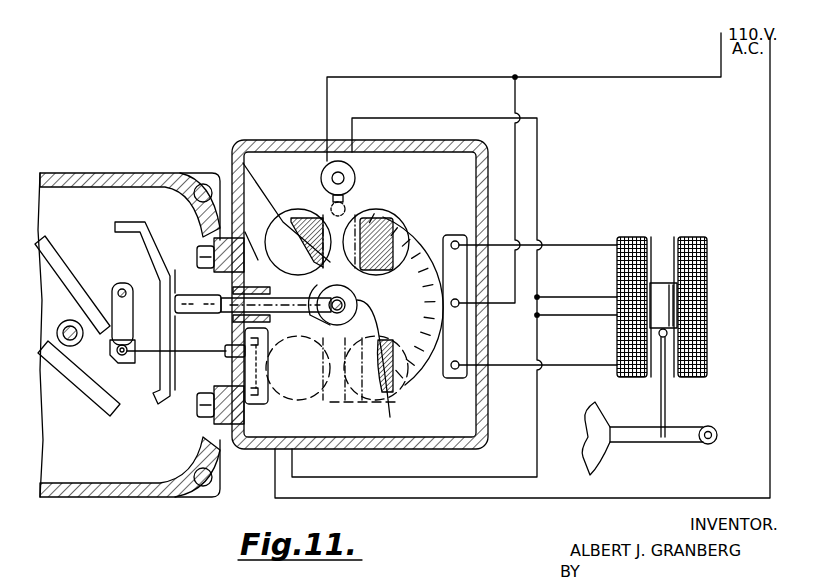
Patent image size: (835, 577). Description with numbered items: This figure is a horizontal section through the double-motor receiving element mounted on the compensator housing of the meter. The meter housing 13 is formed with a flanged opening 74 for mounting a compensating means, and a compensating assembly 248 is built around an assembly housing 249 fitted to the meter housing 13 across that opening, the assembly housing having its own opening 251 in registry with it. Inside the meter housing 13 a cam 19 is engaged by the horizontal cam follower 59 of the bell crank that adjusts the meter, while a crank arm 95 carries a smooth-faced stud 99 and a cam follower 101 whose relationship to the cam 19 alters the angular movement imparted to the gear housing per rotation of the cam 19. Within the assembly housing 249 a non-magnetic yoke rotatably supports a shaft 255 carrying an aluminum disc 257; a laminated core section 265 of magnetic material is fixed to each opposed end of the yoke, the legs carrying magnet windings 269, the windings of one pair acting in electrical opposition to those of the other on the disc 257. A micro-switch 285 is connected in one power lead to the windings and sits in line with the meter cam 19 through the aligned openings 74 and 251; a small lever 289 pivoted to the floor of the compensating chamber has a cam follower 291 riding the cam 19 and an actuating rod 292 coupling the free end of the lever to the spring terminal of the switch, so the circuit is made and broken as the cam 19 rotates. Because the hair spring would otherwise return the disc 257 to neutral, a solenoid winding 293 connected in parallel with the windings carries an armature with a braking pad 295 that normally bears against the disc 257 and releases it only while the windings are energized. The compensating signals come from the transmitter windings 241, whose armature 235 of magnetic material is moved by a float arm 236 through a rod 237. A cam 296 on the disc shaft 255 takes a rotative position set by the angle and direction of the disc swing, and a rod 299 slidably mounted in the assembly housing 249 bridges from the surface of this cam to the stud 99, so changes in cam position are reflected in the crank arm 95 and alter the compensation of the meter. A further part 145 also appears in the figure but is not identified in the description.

The housing 13 is at (112, 175).
The cam 19 is at (66, 322).
The horizontal cam follower 59 is at (72, 290).
The flanged opening 74 is at (202, 394).
The crank arm 95 is at (160, 360).
The smooth-faced stud 99 is at (194, 295).
The cam follower 101 is at (85, 388).
The cam 145 is at (600, 414).
The armature 235 is at (658, 294).
The float arm 236 is at (640, 444).
The rod 237 is at (668, 401).
The windings 241 is at (706, 270).
The assembly 248 is at (384, 419).
The assembly housing 249 is at (288, 140).
The opening 251 is at (246, 372).
The shaft 255 is at (356, 350).
The disc 257 is at (418, 370).
The laminated core section 265 is at (290, 220).
The magnet windings 269 is at (302, 215).
The micro-switch 285 is at (232, 344).
The small lever 289 is at (128, 322).
The cam follower 291 is at (115, 360).
The actuating rod 292 is at (206, 351).
The solenoid winding 293 is at (356, 170).
The braking pad 295 is at (332, 208).
The cam 296 is at (352, 310).
The rod 299 is at (283, 298).